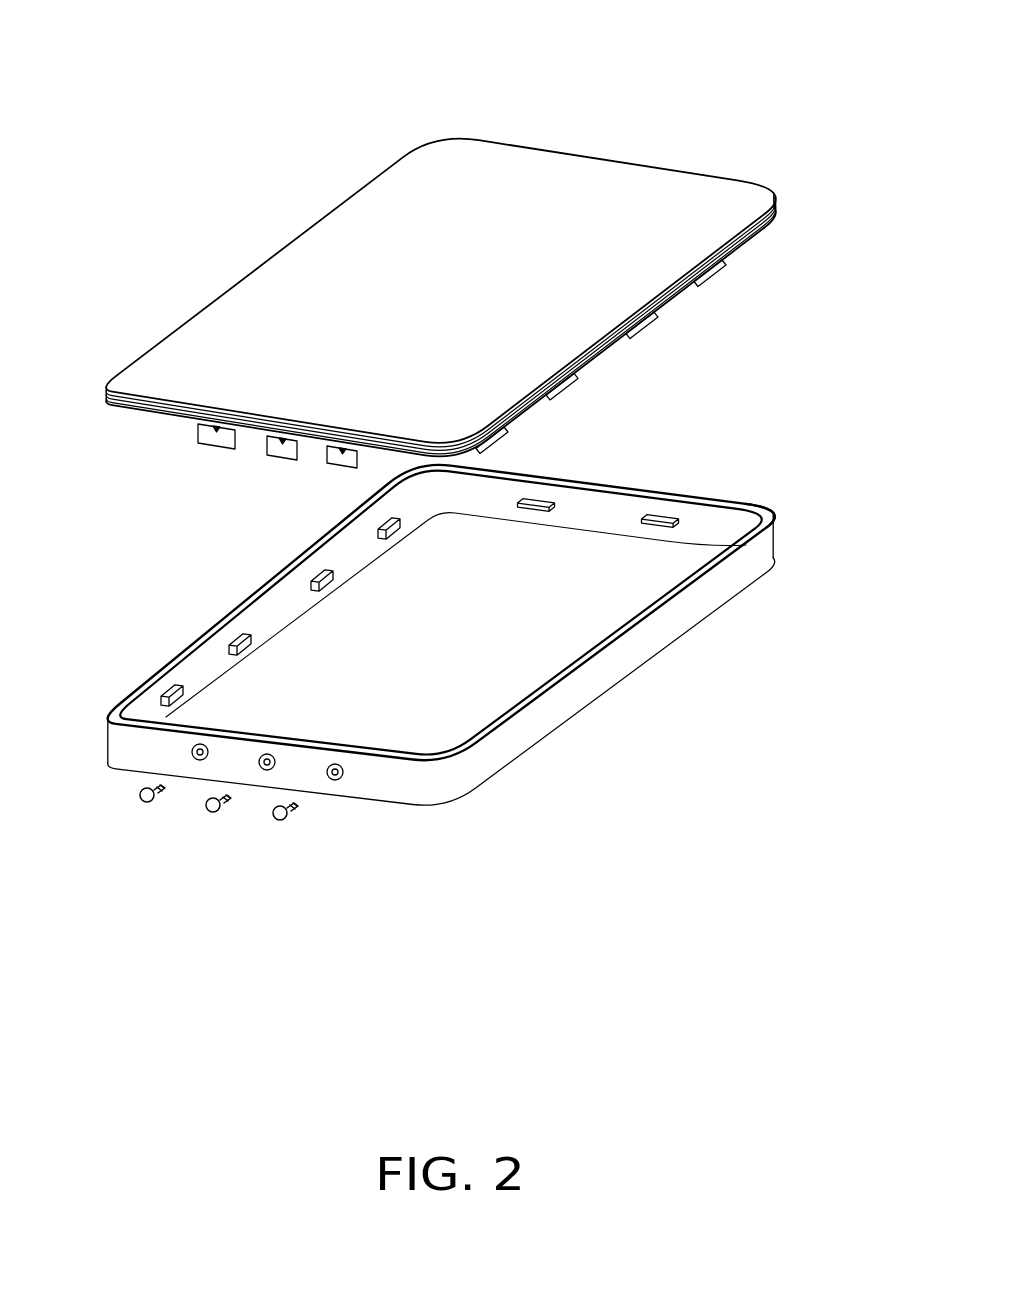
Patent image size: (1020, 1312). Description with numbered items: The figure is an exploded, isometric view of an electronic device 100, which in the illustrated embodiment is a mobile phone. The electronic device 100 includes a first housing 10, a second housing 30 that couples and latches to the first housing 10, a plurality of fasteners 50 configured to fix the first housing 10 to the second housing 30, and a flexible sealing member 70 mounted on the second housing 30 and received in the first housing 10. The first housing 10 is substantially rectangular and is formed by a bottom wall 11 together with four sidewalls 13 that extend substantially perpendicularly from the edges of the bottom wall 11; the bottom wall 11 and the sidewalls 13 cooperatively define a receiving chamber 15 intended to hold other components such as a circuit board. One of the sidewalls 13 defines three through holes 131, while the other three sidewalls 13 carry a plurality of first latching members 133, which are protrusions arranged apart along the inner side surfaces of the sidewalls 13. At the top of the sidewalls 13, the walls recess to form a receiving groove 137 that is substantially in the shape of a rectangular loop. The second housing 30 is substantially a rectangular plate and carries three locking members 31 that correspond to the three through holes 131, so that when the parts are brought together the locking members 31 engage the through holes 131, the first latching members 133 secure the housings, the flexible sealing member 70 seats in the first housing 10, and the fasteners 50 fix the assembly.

The electronic device 100 is at (490, 39).
The second housing 30 is at (446, 300).
The flexible sealing member 70 is at (168, 420).
The locking members 31 is at (218, 446).
The first housing 10 is at (476, 649).
The bottom wall 11 is at (563, 625).
The sidewalls 13 is at (693, 605).
The receiving groove 137 is at (757, 513).
The first latching members 133 is at (540, 500).
The receiving chamber 15 is at (335, 673).
The through holes 131 is at (331, 778).
The fasteners 50 is at (282, 818).